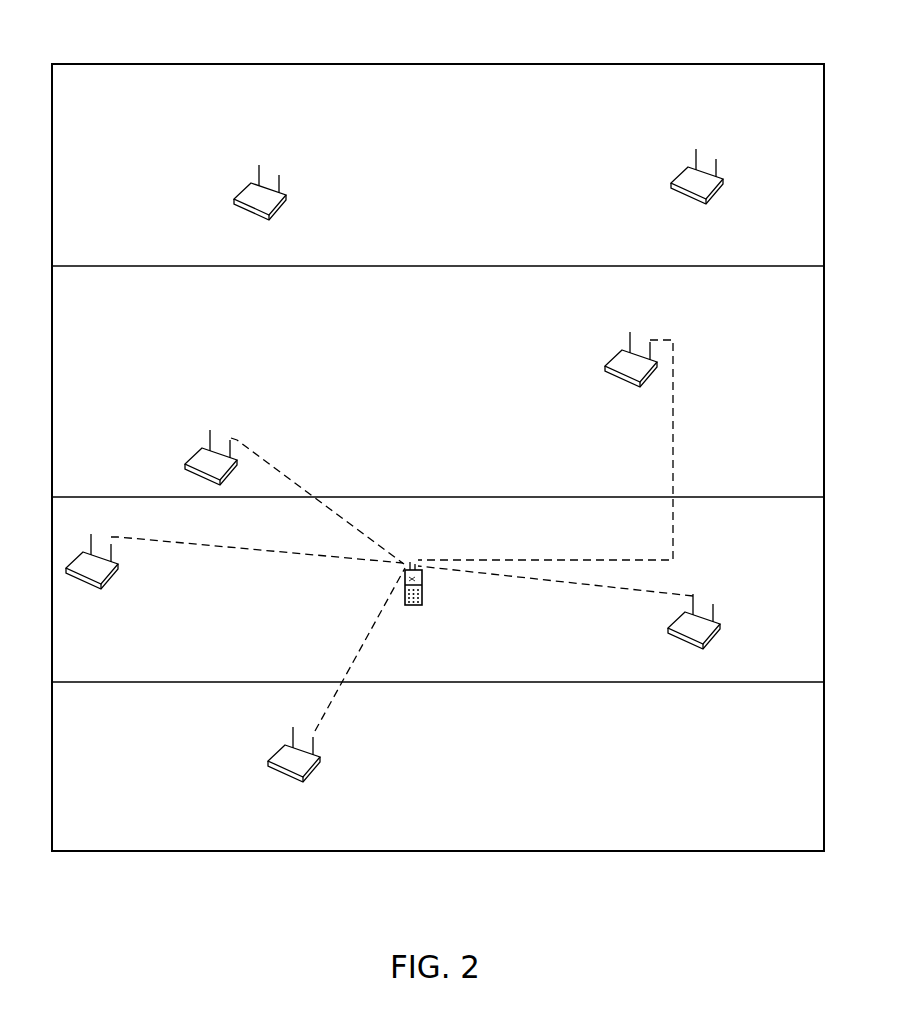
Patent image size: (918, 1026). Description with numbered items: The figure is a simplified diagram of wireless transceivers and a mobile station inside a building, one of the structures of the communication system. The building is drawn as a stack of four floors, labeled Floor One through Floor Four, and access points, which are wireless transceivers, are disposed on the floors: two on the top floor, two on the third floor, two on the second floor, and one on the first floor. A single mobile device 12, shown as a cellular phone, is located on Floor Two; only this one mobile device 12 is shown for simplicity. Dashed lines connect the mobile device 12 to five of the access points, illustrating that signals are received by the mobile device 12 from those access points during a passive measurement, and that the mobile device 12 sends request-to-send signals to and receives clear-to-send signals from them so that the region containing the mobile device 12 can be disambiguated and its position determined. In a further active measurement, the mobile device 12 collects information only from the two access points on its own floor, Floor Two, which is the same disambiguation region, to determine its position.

The mobile device 12 is at (422, 600).